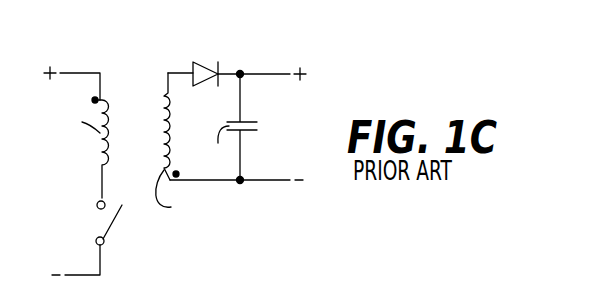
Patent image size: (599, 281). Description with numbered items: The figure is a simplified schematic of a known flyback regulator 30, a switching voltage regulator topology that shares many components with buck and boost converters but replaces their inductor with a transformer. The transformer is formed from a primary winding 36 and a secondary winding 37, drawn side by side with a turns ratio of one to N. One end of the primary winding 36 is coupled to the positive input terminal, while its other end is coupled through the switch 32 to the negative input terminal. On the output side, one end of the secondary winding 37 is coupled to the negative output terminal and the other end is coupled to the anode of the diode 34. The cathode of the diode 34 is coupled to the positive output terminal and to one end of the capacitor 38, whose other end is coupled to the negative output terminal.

The flyback regulator 30 is at (242, 207).
The switch 32 is at (112, 228).
The diode 34 is at (217, 71).
The primary winding 36 is at (107, 93).
The secondary winding 37 is at (163, 93).
The capacitor 38 is at (250, 138).